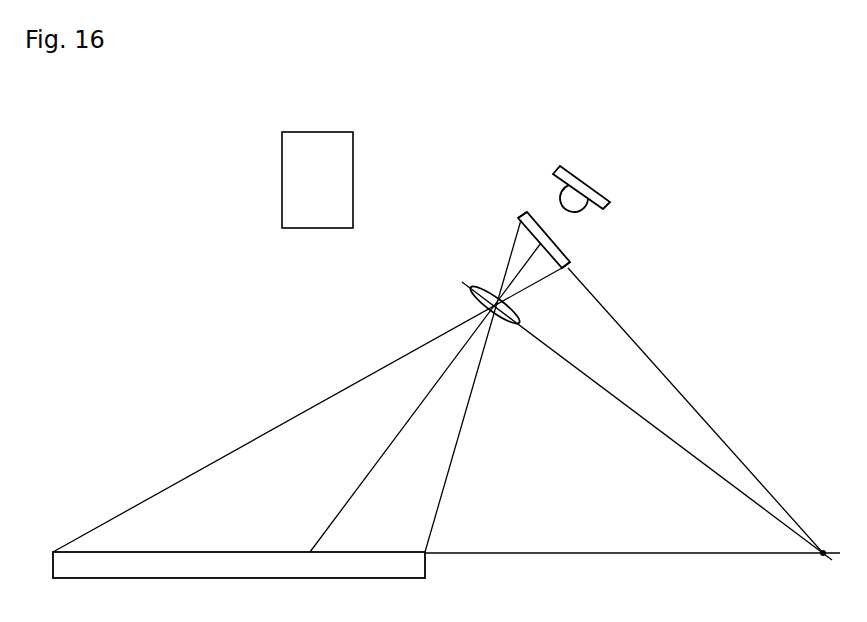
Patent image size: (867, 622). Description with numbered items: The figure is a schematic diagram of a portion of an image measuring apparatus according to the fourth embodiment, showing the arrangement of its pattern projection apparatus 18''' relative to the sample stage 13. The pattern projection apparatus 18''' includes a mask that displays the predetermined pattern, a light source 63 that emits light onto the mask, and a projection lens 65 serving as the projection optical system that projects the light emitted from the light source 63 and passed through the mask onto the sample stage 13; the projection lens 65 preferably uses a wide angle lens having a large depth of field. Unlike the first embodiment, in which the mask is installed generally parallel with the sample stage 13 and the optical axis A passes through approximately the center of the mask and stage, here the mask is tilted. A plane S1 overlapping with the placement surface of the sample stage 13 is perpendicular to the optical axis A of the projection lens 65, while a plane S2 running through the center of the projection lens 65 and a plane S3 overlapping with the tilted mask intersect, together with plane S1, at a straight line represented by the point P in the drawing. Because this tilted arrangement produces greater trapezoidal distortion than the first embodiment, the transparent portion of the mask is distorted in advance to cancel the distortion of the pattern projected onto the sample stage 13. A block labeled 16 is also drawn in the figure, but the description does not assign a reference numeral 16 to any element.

The control unit 16 is at (282, 180).
The sample stage 13 is at (208, 552).
The light source 63 is at (600, 194).
The projection lens 65 is at (477, 302).
The pattern projection apparatus 18''' is at (756, 247).
The optical axis A is at (380, 455).
The plane S1 is at (570, 552).
The plane S2 is at (577, 370).
The plane S3 is at (638, 353).
The point P is at (823, 557).